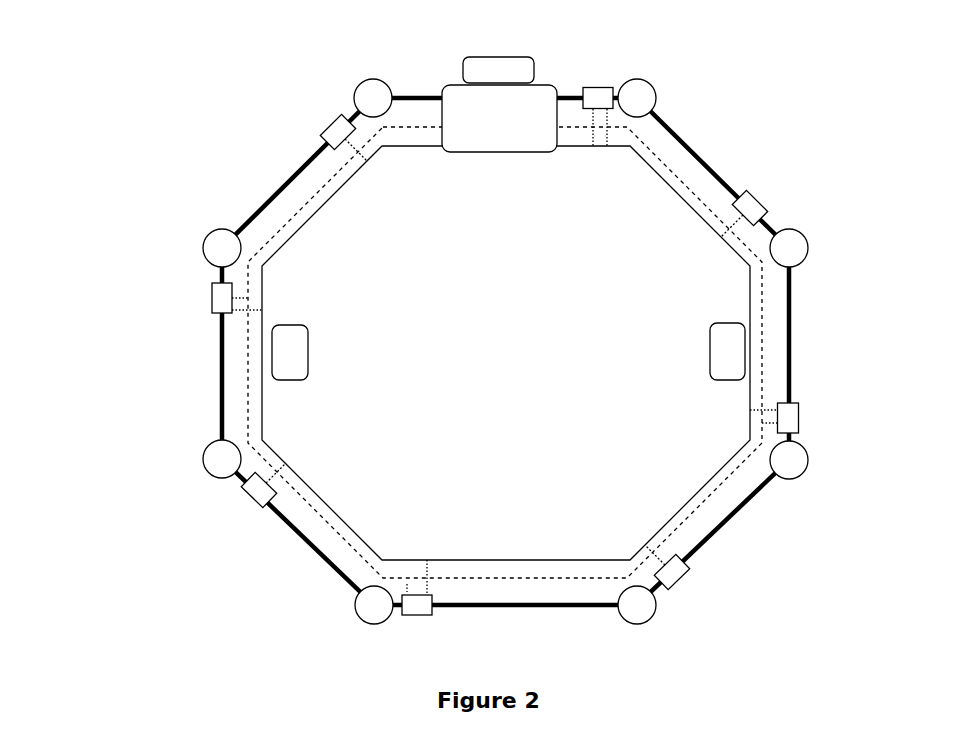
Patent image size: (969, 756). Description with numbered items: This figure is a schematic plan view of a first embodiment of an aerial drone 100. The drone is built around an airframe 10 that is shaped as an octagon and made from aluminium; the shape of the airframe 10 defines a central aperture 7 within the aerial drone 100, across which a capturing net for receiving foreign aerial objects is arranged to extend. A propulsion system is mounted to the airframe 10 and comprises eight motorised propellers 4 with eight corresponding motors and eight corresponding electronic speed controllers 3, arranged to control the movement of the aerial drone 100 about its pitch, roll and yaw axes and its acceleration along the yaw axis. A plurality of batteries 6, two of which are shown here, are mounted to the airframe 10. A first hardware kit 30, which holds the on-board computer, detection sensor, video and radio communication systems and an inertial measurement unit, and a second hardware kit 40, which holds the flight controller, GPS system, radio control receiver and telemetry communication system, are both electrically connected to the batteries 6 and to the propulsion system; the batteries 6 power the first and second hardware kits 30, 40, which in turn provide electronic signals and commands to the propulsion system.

The aerial drone 100 is at (730, 163).
The airframe 10 is at (297, 528).
The central aperture 7 is at (518, 364).
The electronic speed controllers 3 is at (792, 417).
The motorised propellers 4 is at (370, 604).
The batteries 6 is at (275, 352).
The first hardware kit 30 is at (550, 105).
The second hardware kit 40 is at (483, 70).